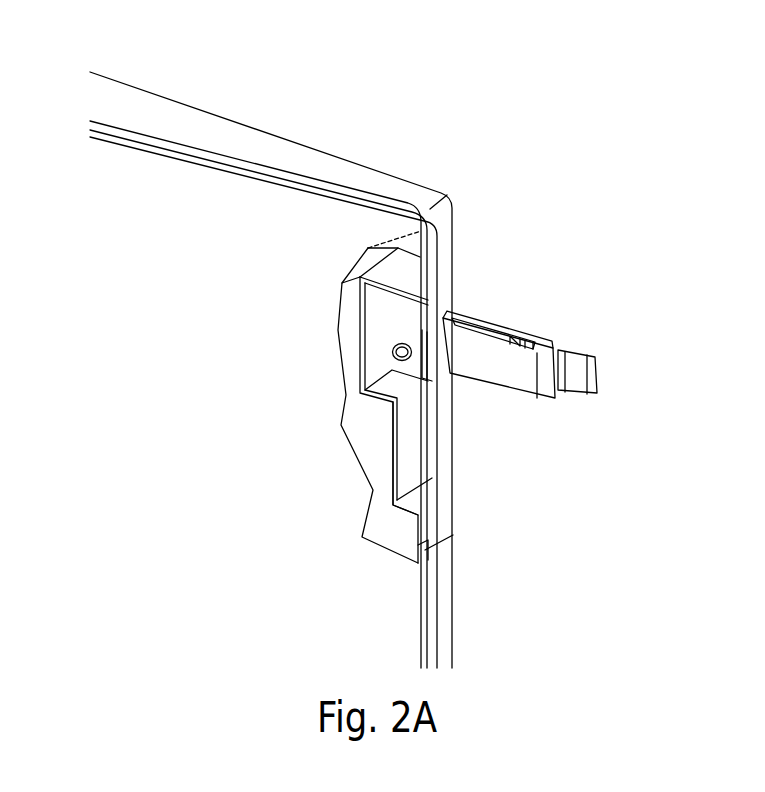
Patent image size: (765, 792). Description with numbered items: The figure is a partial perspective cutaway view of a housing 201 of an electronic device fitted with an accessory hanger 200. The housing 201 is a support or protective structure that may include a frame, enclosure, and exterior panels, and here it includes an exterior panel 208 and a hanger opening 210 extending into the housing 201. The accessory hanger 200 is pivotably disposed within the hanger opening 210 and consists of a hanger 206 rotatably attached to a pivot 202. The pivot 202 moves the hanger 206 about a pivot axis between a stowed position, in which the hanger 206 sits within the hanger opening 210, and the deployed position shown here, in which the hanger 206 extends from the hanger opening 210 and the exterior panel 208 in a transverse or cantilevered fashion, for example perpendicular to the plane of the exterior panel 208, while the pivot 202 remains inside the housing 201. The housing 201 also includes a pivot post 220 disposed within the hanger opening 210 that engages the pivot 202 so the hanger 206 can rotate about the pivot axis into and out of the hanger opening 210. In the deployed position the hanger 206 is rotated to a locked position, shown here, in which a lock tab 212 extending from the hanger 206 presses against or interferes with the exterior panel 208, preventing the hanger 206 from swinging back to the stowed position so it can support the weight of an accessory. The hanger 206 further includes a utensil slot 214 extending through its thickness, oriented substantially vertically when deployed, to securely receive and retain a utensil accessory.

The accessory hanger 200 is at (580, 466).
The housing 201 is at (345, 368).
The pivot 202 is at (387, 397).
The hanger 206 is at (483, 330).
The exterior panel 208 is at (445, 283).
The hanger opening 210 is at (418, 442).
The lock tab 212 is at (432, 360).
The utensil slot 214 is at (558, 345).
The pivot post 220 is at (392, 350).